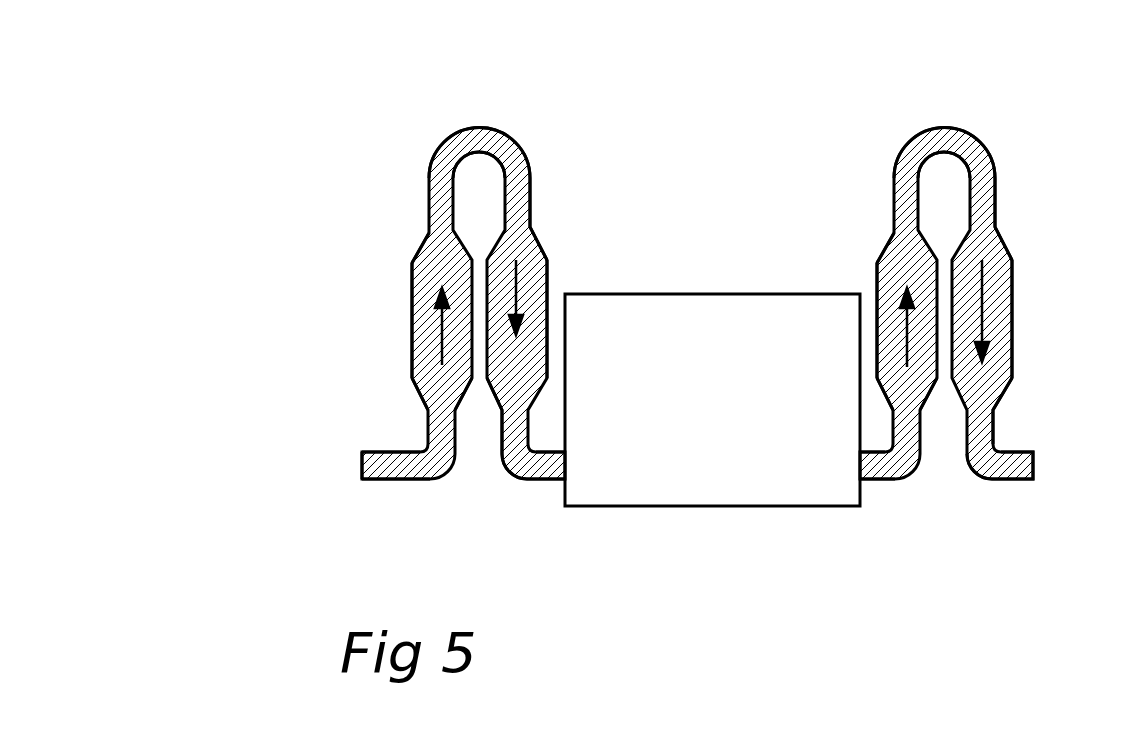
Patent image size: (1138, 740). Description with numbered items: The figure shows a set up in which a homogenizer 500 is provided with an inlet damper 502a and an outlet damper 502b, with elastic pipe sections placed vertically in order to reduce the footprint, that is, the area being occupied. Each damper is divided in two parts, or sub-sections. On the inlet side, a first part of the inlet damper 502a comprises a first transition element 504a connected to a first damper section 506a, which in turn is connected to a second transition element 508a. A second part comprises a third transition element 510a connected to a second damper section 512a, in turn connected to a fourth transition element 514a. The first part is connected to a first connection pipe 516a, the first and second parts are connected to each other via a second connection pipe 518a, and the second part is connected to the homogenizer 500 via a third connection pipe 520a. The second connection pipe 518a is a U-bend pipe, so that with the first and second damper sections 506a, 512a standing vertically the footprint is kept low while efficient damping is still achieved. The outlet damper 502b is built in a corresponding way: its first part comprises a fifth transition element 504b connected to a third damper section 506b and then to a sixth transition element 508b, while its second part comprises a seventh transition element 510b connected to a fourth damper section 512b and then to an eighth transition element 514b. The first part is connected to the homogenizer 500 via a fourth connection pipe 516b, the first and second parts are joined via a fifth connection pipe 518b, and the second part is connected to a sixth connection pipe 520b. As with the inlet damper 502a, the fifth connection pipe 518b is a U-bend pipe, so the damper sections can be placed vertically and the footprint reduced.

The homogenizer 500 is at (702, 483).
The inlet damper 502a is at (368, 152).
The outlet damper 502b is at (921, 102).
The first transition element 504a is at (420, 400).
The fifth transition element 504b is at (930, 398).
The first damper section 506a is at (412, 317).
The third damper section 506b is at (877, 287).
The second transition element 508a is at (418, 248).
The sixth transition element 508b is at (890, 242).
The third transition element 510a is at (538, 240).
The seventh transition element 510b is at (1003, 240).
The second damper section 512a is at (548, 291).
The fourth damper section 512b is at (1013, 291).
The fourth transition element 514a is at (497, 397).
The eighth transition element 514b is at (1013, 384).
The first connection pipe 516a is at (385, 478).
The fourth connection pipe 516b is at (903, 477).
The second connection pipe 518a is at (505, 133).
The fifth connection pipe 518b is at (970, 133).
The third connection pipe 520a is at (518, 477).
The sixth connection pipe 520b is at (1018, 452).